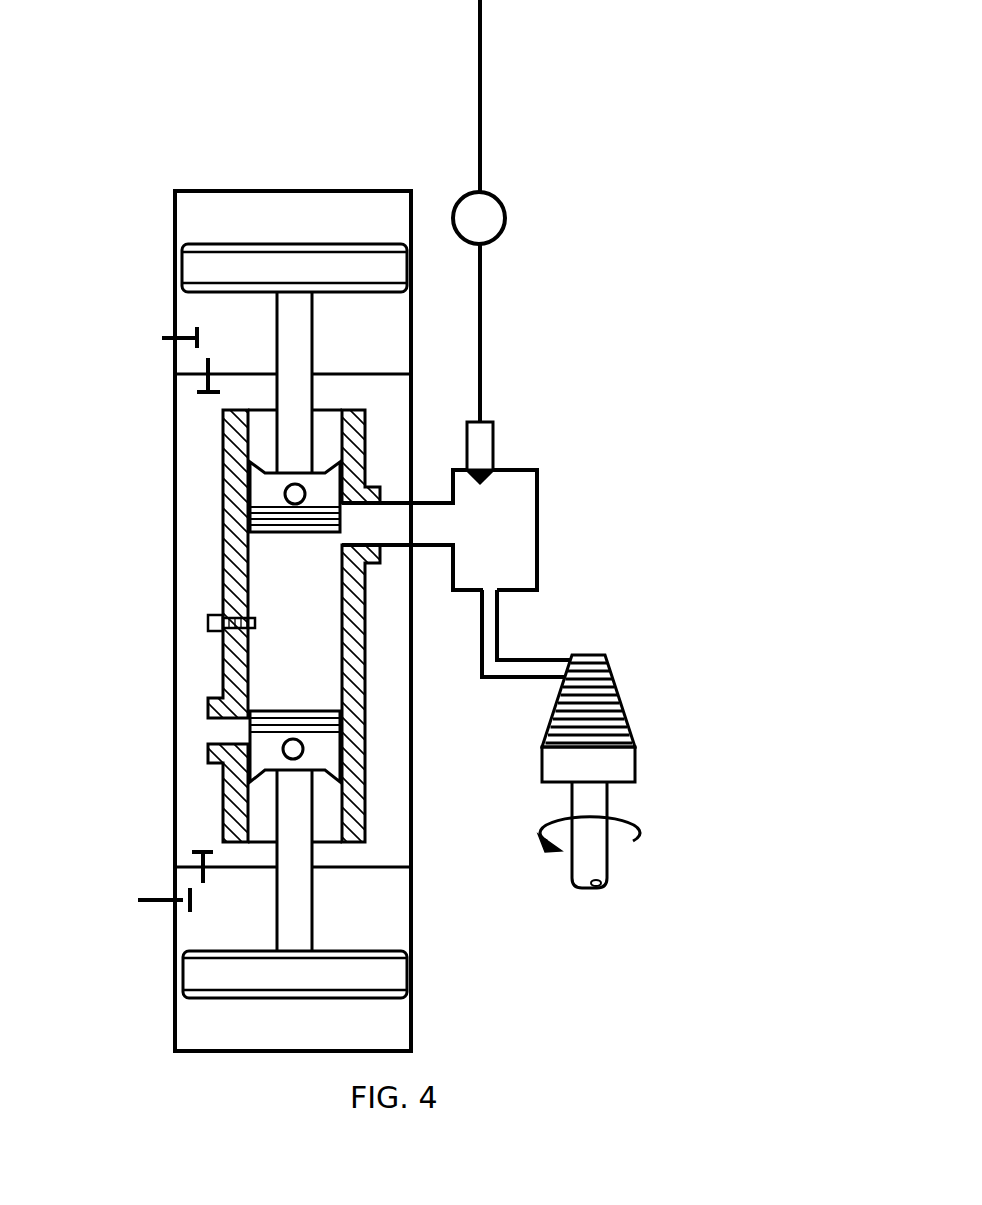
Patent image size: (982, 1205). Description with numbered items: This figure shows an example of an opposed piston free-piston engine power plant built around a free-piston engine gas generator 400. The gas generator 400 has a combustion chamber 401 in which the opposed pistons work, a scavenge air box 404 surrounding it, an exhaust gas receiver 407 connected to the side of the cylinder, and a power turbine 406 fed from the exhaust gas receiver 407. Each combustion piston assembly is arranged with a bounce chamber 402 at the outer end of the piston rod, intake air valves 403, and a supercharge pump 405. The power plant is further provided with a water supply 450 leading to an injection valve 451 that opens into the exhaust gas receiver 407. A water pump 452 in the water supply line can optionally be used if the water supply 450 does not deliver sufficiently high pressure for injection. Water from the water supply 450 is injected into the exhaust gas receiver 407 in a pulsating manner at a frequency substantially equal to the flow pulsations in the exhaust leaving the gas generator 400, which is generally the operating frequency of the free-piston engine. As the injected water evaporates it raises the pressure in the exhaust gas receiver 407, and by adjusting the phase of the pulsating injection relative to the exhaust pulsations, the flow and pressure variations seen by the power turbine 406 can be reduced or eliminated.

The free-piston engine gas generator 400 is at (412, 852).
The combustion chamber 401 is at (270, 652).
The bounce chamber 402 is at (200, 218).
The intake air valves 403 is at (150, 898).
The scavenge air box 404 is at (202, 560).
The supercharge pump 405 is at (200, 316).
The power turbine 406 is at (628, 725).
The exhaust gas receiver 407 is at (523, 533).
The water supply 450 is at (480, 43).
The injection valve 451 is at (487, 444).
The water pump 452 is at (492, 220).